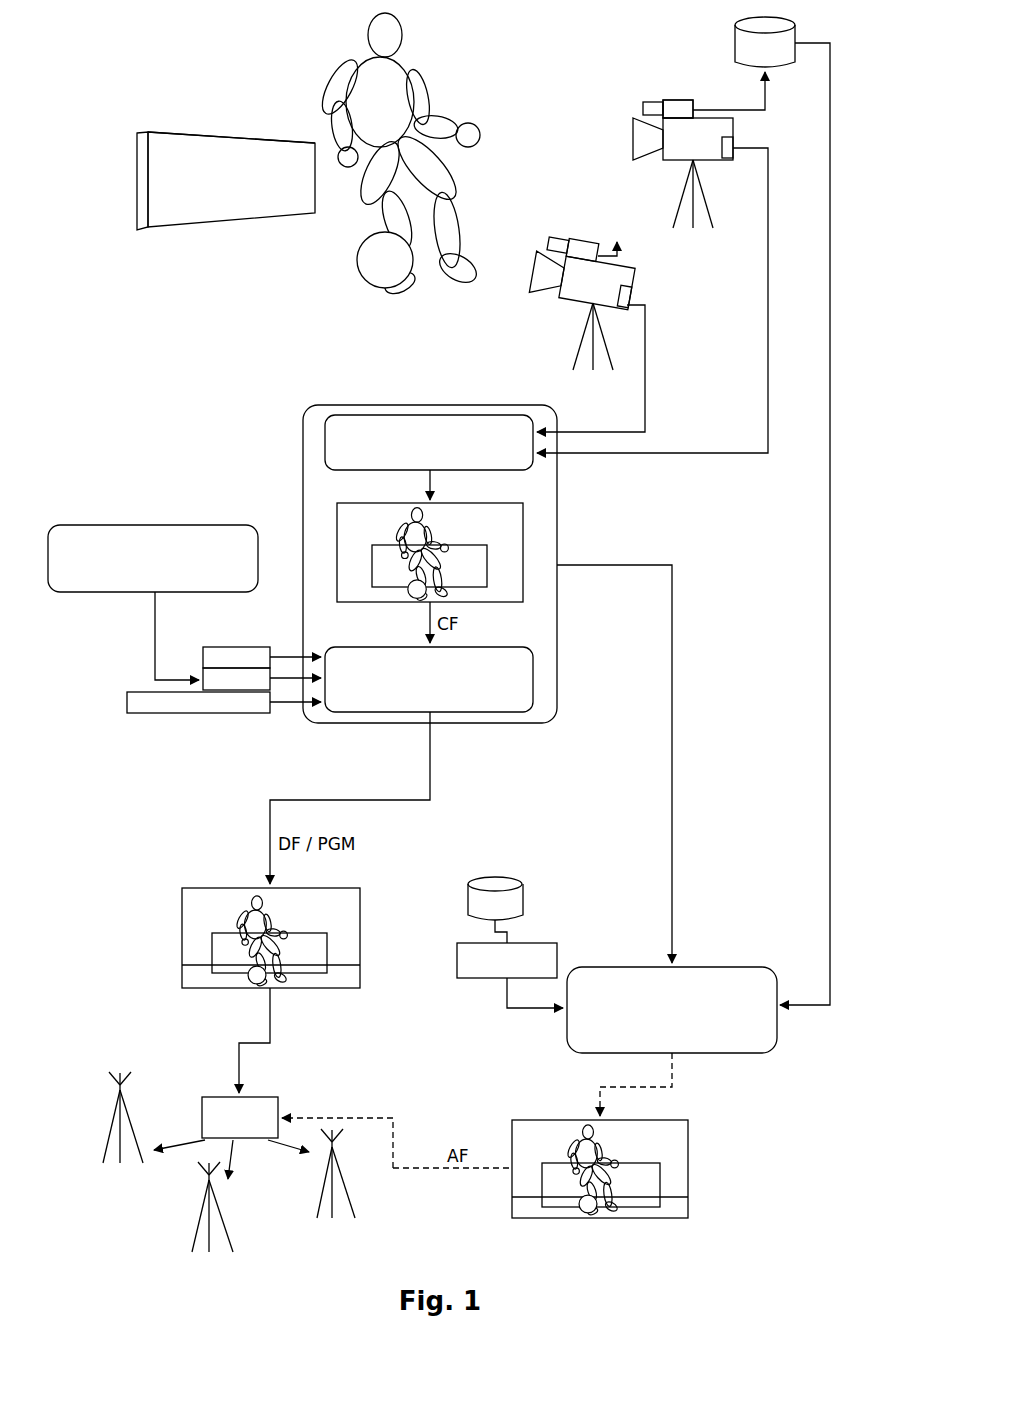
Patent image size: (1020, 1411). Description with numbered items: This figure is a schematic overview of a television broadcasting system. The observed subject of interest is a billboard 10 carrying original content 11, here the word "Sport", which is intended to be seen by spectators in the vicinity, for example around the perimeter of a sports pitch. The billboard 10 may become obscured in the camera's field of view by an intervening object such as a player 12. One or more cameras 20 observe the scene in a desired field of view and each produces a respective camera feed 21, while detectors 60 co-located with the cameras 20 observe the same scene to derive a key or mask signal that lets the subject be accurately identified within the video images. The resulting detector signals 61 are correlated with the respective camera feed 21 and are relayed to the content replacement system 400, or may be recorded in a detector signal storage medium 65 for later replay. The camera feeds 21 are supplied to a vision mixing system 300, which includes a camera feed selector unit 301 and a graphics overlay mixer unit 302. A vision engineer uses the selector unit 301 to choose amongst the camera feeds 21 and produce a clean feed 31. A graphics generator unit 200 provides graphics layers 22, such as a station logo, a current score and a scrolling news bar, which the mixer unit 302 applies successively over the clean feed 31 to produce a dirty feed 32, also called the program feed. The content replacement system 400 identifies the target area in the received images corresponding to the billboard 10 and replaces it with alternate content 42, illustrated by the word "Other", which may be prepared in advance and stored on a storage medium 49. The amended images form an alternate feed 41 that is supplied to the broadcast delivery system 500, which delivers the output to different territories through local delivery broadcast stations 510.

The billboard 10 is at (227, 227).
The original content 11 is at (227, 140).
The player 12 is at (413, 270).
The camera 20 is at (710, 160).
The camera feed 21 is at (768, 200).
The graphics layers 22 is at (243, 713).
The clean feed 31 is at (498, 602).
The dirty feed 32 is at (360, 975).
The alternate feed 41 is at (688, 1205).
The alternate content 42 is at (557, 960).
The storage medium 49 is at (517, 895).
The detector 60 is at (677, 100).
The detector signals 61 is at (749, 112).
The detector signal storage medium 65 is at (778, 70).
The graphics generator unit 200 is at (191, 592).
The vision mixing system 300 is at (552, 658).
The camera feed selector unit 301 is at (493, 470).
The graphics overlay mixer unit 302 is at (498, 712).
The content replacement system 400 is at (740, 1053).
The broadcast delivery system 500 is at (267, 1097).
The local delivery broadcast station 510 is at (135, 1128).